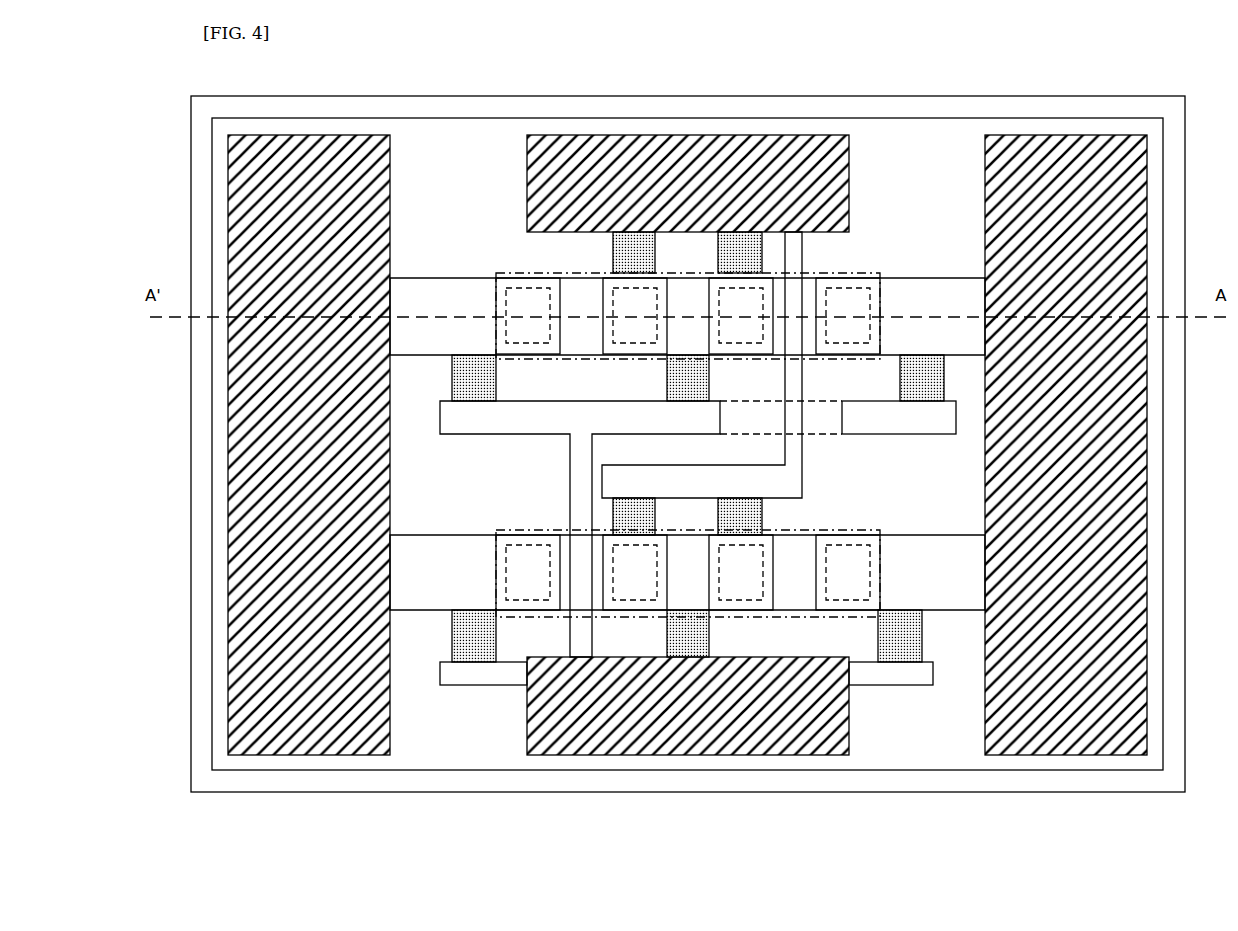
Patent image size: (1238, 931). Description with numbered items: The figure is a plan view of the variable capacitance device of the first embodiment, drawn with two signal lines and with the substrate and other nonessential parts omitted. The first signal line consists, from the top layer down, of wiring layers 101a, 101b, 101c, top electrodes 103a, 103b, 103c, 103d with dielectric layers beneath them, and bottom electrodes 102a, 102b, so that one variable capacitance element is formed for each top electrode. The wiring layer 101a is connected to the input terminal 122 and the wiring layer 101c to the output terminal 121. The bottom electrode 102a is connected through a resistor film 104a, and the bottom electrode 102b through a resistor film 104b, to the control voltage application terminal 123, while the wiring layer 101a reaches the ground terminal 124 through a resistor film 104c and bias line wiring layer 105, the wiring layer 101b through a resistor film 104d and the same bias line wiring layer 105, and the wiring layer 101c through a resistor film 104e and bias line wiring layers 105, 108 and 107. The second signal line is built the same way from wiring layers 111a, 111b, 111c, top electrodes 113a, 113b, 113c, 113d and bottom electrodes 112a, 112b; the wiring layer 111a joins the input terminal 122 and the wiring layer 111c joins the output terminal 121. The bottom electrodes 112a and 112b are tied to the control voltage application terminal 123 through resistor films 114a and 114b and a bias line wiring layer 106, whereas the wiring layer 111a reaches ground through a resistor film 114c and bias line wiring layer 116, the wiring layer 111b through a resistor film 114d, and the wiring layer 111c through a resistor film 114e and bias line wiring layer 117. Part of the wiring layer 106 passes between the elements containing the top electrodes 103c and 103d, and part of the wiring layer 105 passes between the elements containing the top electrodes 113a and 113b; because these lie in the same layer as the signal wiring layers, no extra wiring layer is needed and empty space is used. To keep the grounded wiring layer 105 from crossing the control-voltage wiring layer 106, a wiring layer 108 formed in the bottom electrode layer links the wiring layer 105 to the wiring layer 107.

The wiring layer 101a is at (478, 293).
The wiring layer 101b is at (808, 228).
The wiring layer 101c is at (900, 293).
The bottom electrode 102a is at (500, 277).
The bottom electrode 102b is at (876, 277).
The top electrode 103a is at (528, 300).
The top electrode 103b is at (633, 300).
The top electrode 103c is at (740, 300).
The top electrode 103d is at (845, 300).
The resistor film 104a is at (628, 245).
The resistor film 104b is at (768, 282).
The resistor film 104c is at (483, 393).
The resistor film 104d is at (677, 393).
The resistor film 104e is at (910, 393).
The bias line wiring layer 105 is at (597, 425).
The bias line wiring layer 106 is at (793, 483).
The bias line wiring layer 107 is at (917, 425).
The wiring layer 108 is at (768, 420).
The wiring layer 111a is at (478, 550).
The wiring layer 111b is at (693, 593).
The wiring layer 111c is at (903, 550).
The bottom electrode 112a is at (497, 533).
The bottom electrode 112b is at (875, 535).
The top electrode 113a is at (528, 553).
The top electrode 113b is at (633, 590).
The top electrode 113c is at (740, 588).
The top electrode 113d is at (847, 553).
The resistor film 114a is at (632, 512).
The resistor film 114b is at (740, 518).
The resistor film 114c is at (475, 652).
The resistor film 114d is at (688, 648).
The resistor film 114e is at (903, 647).
The bias line wiring layer 116 is at (452, 675).
The bias line wiring layer 117 is at (923, 675).
The output terminal 121 is at (1140, 445).
The input terminal 122 is at (237, 445).
The control voltage application terminal 123 is at (690, 143).
The ground terminal 124 is at (792, 738).